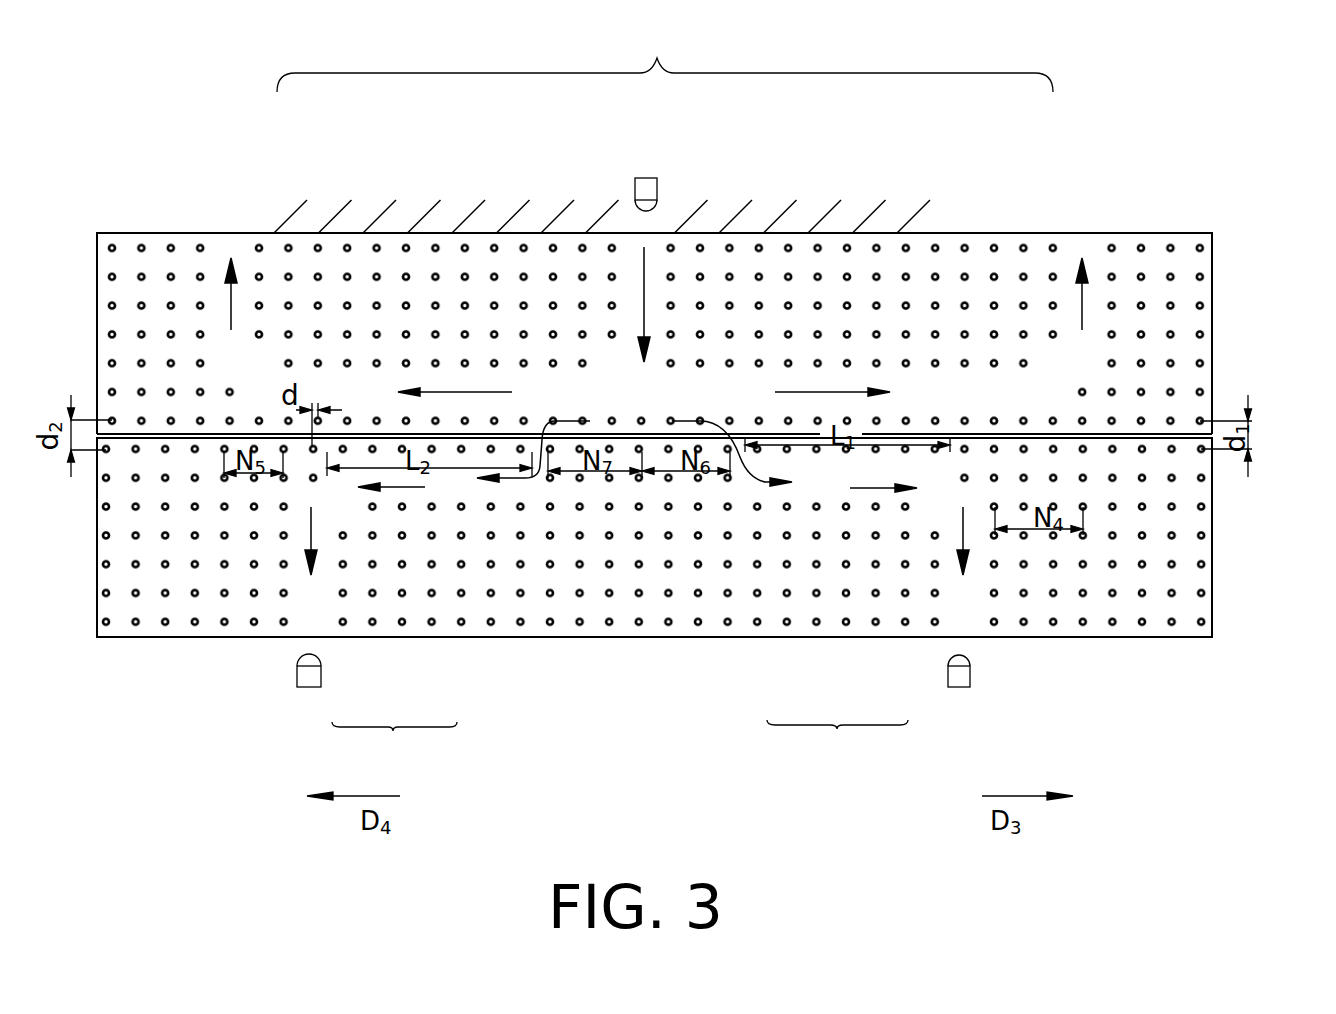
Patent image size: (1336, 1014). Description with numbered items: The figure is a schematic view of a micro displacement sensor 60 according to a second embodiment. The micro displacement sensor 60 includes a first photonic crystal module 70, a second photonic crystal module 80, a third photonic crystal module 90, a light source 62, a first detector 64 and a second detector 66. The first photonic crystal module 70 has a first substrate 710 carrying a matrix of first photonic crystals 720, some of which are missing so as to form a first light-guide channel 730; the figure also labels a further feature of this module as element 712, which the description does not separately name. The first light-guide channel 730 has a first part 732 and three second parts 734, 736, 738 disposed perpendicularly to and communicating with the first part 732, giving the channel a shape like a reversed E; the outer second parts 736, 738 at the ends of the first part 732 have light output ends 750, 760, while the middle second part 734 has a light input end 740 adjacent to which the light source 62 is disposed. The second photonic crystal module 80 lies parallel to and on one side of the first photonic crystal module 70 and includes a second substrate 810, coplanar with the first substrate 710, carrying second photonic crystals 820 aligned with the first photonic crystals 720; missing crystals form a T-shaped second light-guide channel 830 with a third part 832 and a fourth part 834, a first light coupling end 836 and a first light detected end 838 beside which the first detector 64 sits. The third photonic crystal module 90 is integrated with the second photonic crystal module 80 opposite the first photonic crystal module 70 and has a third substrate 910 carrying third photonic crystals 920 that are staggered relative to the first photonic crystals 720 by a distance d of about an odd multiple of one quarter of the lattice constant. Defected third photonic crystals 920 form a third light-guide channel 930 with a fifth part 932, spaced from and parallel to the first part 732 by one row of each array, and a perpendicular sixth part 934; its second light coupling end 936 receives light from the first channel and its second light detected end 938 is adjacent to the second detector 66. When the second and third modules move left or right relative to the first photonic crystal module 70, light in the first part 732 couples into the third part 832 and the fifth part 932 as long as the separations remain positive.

The micro displacement sensor 60 is at (817, 38).
The light source 62 is at (643, 190).
The first detector 64 is at (957, 675).
The second detector 66 is at (310, 676).
The first photonic crystal module 70 is at (666, 312).
The first substrate 710 is at (1200, 267).
The second surface of first plate 712 is at (127, 233).
The first photonic crystals 720 is at (1170, 243).
The first light-guide channel 730 is at (656, 211).
The first part 732 is at (836, 385).
The second part 734 is at (633, 267).
The second part 736 is at (246, 272).
The second part 738 is at (1071, 262).
The light input end 740 is at (668, 207).
The light output end 750 is at (229, 214).
The light output end 760 is at (1083, 217).
The second photonic crystal module 80 is at (986, 537).
The second substrate 810 is at (1203, 613).
The second photonic crystals 820 is at (1202, 536).
The second light-guide channel 830 is at (820, 590).
The third part 832 is at (827, 490).
The fourth part 834 is at (945, 603).
The first light coupling end 836 is at (752, 482).
The first light detected end 838 is at (978, 649).
The third photonic crystal module 90 is at (615, 537).
The third substrate 910 is at (108, 523).
The third photonic crystals 920 is at (135, 625).
The third light-guide channel 930 is at (447, 590).
The fifth part 932 is at (446, 487).
The sixth part 934 is at (323, 590).
The second light coupling end 936 is at (520, 483).
The second light detected end 938 is at (292, 649).